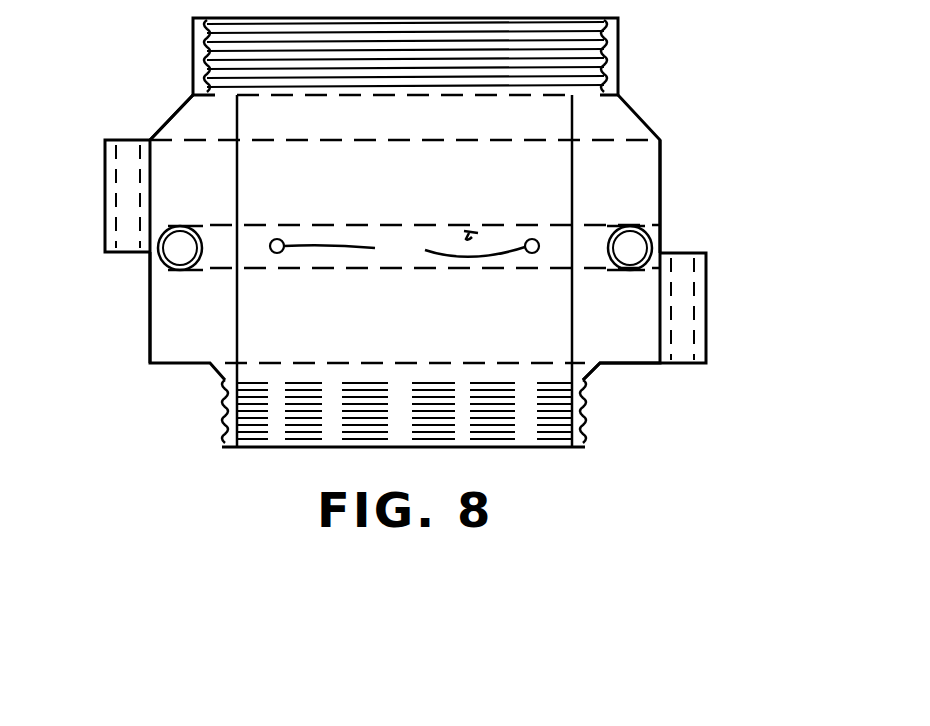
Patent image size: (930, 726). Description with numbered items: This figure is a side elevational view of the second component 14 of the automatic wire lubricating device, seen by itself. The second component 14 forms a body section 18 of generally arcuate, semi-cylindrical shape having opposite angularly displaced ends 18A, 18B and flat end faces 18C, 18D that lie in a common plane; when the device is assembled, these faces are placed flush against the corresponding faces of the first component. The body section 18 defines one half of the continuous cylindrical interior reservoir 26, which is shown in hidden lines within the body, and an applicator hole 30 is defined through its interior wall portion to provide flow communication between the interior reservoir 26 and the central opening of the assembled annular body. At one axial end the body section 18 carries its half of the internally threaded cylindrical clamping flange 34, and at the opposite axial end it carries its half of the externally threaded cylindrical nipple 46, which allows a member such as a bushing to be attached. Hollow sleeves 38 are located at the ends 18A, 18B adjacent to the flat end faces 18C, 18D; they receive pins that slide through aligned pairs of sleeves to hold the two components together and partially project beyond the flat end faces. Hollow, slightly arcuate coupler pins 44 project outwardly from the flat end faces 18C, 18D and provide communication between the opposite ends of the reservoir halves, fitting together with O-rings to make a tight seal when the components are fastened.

The second component 14 is at (644, 61).
The body section 18 is at (660, 177).
The angularly displaced end 18A is at (162, 335).
The angularly displaced end 18B is at (635, 352).
The flat end face 18C is at (185, 153).
The flat end face 18D is at (647, 208).
The interior reservoir 26 is at (471, 232).
The applicator hole 30 is at (404, 248).
The clamping flange 34 is at (193, 49).
The sleeves 38 is at (105, 215).
The coupler pins 44 is at (606, 248).
The nipple 46 is at (225, 418).